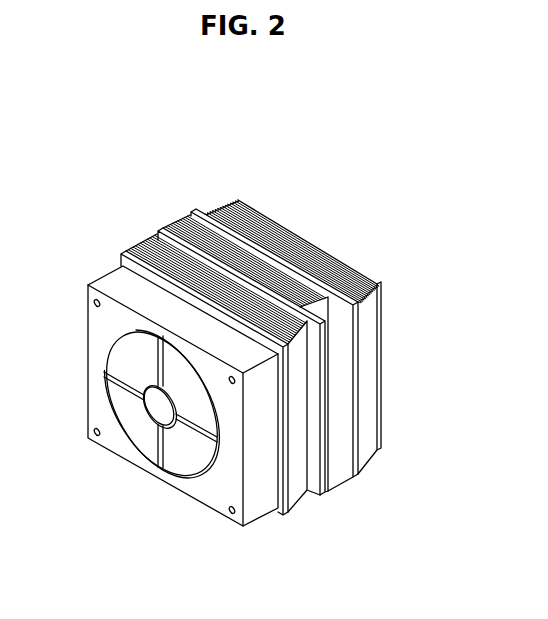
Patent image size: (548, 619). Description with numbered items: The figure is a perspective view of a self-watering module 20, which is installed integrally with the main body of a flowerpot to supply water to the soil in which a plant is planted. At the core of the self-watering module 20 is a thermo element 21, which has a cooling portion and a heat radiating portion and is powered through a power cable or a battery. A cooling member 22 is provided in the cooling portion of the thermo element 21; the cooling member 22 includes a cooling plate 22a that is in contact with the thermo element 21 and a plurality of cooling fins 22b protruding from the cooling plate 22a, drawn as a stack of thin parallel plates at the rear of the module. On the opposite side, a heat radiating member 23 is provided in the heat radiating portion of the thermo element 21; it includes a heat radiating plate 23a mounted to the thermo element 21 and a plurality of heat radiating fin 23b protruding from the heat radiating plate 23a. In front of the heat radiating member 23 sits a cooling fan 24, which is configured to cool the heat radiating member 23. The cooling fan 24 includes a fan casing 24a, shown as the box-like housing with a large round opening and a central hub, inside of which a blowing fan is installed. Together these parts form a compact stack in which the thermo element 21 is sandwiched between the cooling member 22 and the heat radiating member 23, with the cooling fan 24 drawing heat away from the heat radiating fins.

The self-watering module 20 is at (247, 137).
The thermo element 21 is at (208, 247).
The cooling member 22 is at (325, 318).
The cooling plate 22a is at (370, 278).
The cooling fins 22b is at (306, 239).
The heat radiating member 23 is at (309, 508).
The heat radiating plate 23a is at (165, 233).
The heat radiating fin 23b is at (118, 263).
The cooling fan 24 is at (204, 508).
The fan casing 24a is at (118, 443).